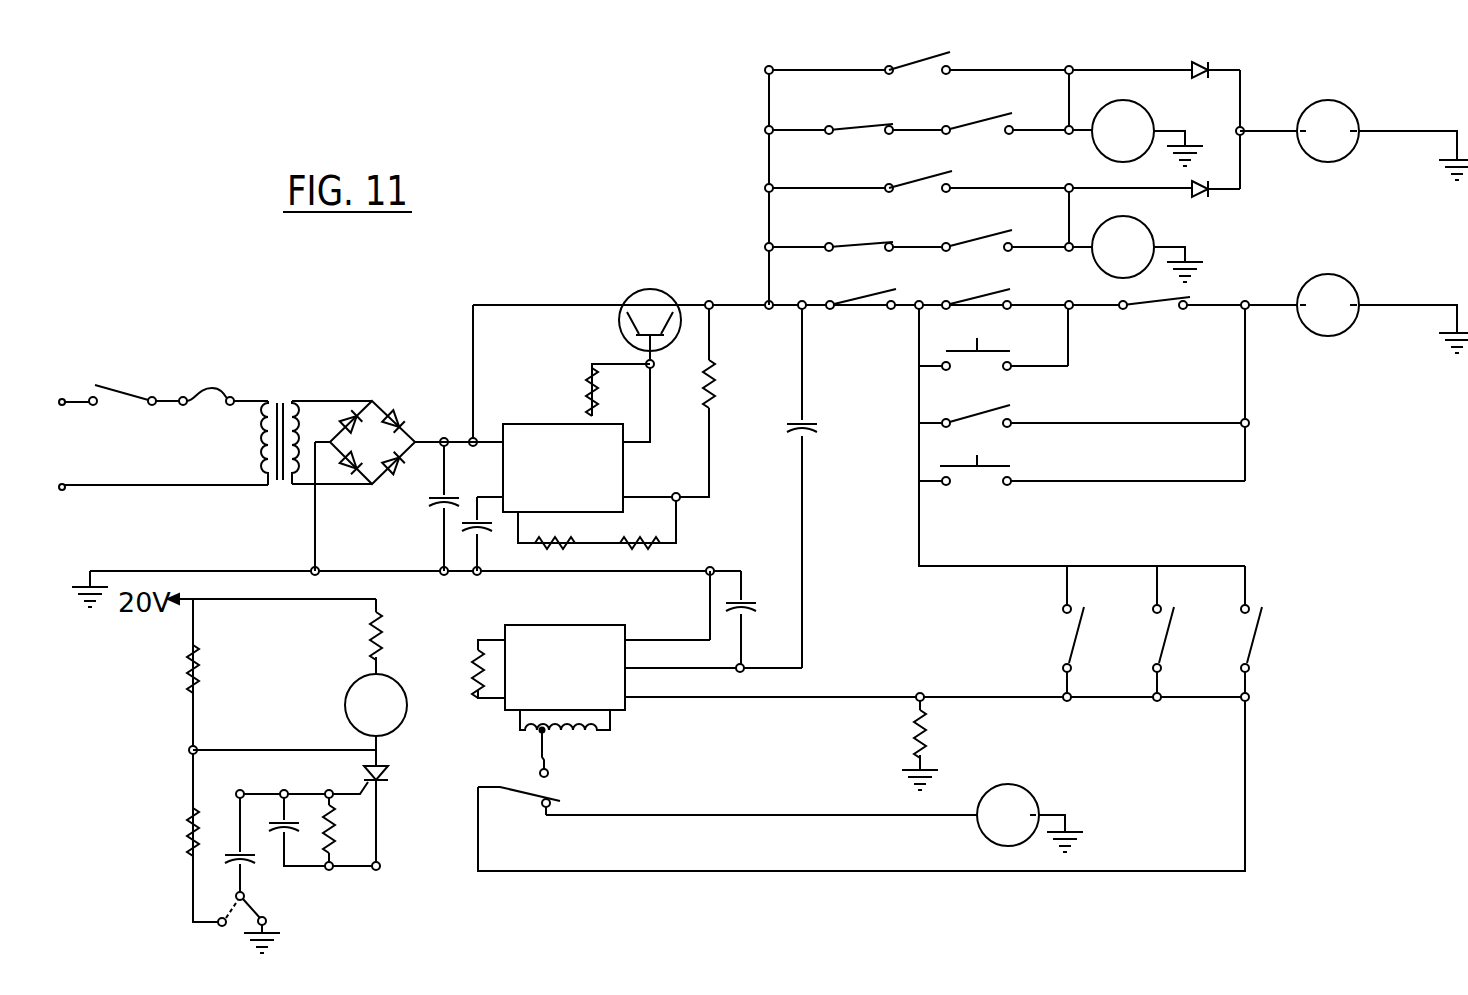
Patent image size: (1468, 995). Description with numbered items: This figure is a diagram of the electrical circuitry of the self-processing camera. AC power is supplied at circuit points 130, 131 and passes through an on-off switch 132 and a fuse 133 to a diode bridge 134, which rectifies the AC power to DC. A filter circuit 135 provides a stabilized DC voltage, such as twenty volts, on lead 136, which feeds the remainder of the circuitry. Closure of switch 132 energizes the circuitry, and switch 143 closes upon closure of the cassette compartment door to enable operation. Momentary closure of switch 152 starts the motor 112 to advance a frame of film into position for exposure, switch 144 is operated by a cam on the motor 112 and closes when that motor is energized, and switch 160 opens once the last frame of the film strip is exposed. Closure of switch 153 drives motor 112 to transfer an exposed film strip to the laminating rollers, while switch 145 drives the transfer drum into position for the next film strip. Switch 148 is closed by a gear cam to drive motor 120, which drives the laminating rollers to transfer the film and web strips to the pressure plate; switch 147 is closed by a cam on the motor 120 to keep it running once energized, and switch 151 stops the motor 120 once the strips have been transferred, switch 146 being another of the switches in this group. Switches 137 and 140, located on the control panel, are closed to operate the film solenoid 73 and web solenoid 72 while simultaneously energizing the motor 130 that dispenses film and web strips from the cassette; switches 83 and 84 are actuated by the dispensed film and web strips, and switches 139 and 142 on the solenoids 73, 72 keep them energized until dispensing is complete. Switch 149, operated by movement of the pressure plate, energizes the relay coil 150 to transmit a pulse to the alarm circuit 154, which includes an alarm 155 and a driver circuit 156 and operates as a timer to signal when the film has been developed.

The web solenoid 72 is at (1148, 233).
The film solenoid 73 is at (1142, 101).
The switch 83 is at (860, 118).
The switch 84 is at (856, 244).
The motor 112 is at (1328, 305).
The motor 120 is at (814, 818).
The motor 130 is at (70, 412).
The circuit point 131 is at (64, 482).
The on-off switch 132 is at (102, 382).
The fuse 133 is at (190, 407).
The diode bridge 134 is at (392, 457).
The filter circuit 135 is at (682, 482).
The lead 136 is at (766, 163).
The switch 137 is at (912, 64).
The switch 139 is at (975, 118).
The switch 140 is at (912, 182).
The switch 142 is at (975, 236).
The switch 143 is at (854, 304).
The switch 144 is at (974, 298).
The switch 145 is at (975, 407).
The switch 146 is at (1074, 641).
The switch 147 is at (1164, 641).
The switch 148 is at (1250, 641).
The switch 149 is at (252, 907).
The relay coil 150 is at (618, 718).
The switch 151 is at (552, 797).
The switch 152 is at (983, 352).
The switch 153 is at (985, 468).
The alarm circuit 154 is at (186, 730).
The alarm 155 is at (345, 698).
The driver circuit 156 is at (390, 834).
The switch 160 is at (1174, 298).